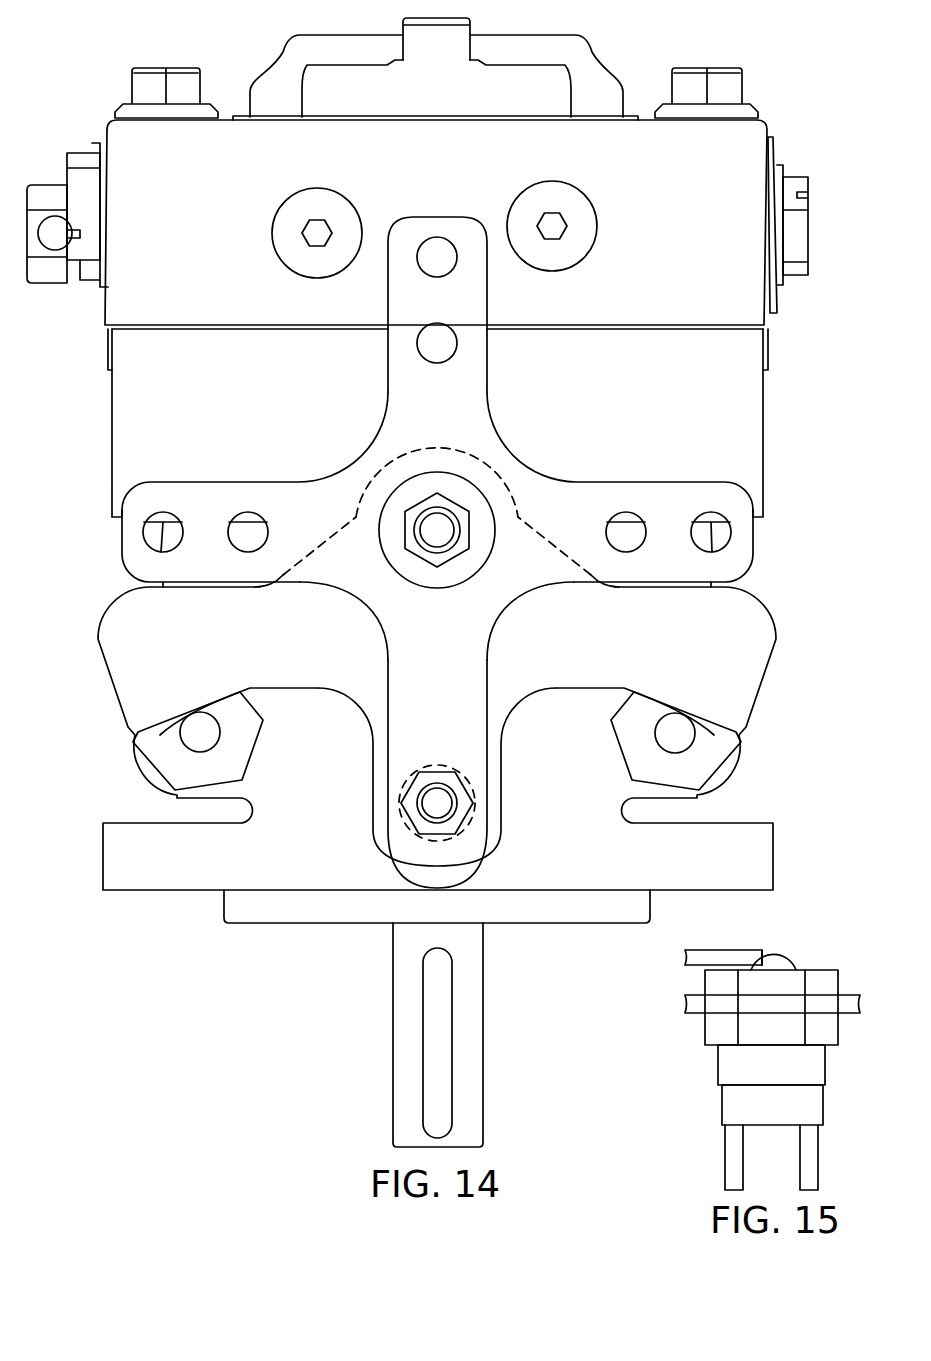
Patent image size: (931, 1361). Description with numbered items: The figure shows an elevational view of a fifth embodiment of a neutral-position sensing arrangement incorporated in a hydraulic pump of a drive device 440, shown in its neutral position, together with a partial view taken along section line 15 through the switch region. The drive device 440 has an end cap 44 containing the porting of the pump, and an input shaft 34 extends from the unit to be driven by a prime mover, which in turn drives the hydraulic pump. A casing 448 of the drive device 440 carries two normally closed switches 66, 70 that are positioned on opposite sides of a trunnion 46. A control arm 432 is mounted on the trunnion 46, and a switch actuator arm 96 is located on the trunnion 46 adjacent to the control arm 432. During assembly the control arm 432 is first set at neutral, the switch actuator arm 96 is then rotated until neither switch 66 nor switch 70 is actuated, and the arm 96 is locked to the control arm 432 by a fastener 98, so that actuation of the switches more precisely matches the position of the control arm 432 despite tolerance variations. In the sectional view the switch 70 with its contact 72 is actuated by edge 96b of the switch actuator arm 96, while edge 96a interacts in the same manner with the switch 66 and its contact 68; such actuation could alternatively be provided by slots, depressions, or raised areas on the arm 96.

In FIG. 14, the drive device 440 is at (793, 70).
In FIG. 14, the end cap 44 is at (196, 232).
In FIG. 14, the control arm 432 is at (460, 315).
In FIG. 14, the casing 448 is at (215, 412).
In FIG. 15, the casing 448 is at (725, 1005).
In FIG. 14, the trunnion 46 is at (437, 530).
In FIG. 14, the switch actuator arm 96 is at (437, 732).
In FIG. 15, the switch actuator arm 96 is at (717, 950).
In FIG. 14, the edge 96a is at (685, 717).
In FIG. 14, the edge 96b is at (192, 723).
In FIG. 15, the edge 96b is at (752, 962).
In FIG. 14, the switch 70 is at (200, 782).
In FIG. 15, the switch 70 is at (788, 1118).
In FIG. 14, the contact 72 is at (220, 727).
In FIG. 15, the contact 72 is at (783, 960).
In FIG. 14, the switch 66 is at (702, 782).
In FIG. 14, the contact 68 is at (660, 733).
In FIG. 14, the fastener 98 is at (437, 772).
In FIG. 14, the input shaft 34 is at (482, 1035).
In FIG. 14, the section line 15 is at (103, 847).